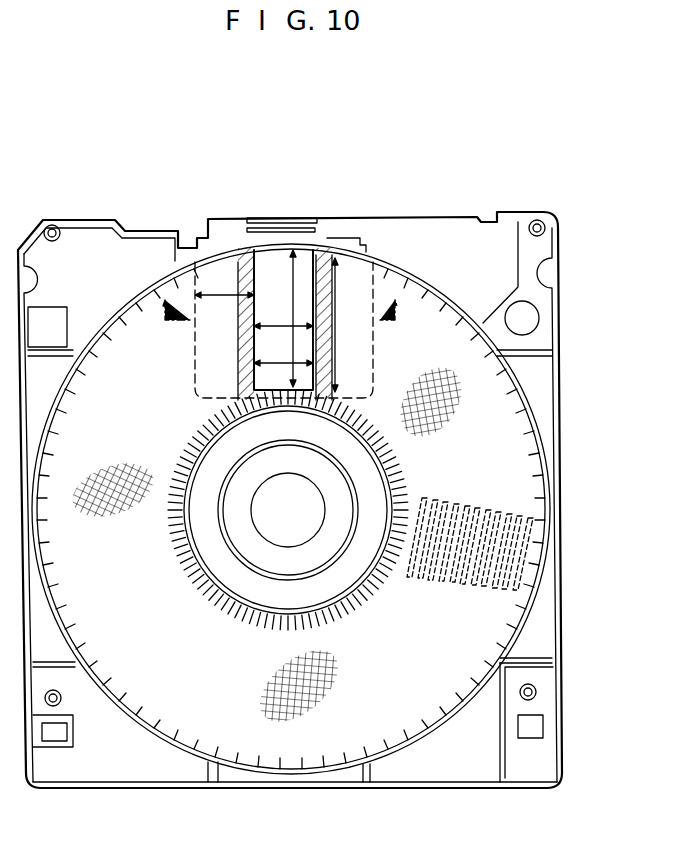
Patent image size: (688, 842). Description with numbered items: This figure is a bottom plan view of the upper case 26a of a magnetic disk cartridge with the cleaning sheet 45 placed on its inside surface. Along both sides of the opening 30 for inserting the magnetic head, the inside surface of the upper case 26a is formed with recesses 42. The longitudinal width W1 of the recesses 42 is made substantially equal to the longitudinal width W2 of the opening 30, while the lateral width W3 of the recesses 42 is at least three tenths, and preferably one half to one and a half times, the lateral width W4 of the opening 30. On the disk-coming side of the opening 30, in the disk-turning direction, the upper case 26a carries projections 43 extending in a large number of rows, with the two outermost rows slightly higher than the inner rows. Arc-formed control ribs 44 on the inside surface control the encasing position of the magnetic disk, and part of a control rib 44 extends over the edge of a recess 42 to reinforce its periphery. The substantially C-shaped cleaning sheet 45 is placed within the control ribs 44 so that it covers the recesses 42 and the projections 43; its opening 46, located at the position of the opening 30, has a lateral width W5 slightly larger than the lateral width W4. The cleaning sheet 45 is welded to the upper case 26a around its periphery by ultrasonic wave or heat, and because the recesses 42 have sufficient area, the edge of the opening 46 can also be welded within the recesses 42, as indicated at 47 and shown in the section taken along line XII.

The upper case 26a is at (417, 223).
The control ribs 44 is at (117, 297).
The welded part 47 is at (347, 610).
The recesses 42 is at (195, 262).
The opening of the cleaning sheet 46 is at (240, 228).
The opening for inserting the magnetic head 30 is at (302, 228).
The cleaning sheet 45 is at (463, 400).
The projections 43 is at (525, 556).
The longitudinal width of the recesses W1 is at (330, 370).
The longitudinal width of the opening W2 is at (293, 290).
The lateral width of the recesses W3 is at (218, 228).
The lateral width of the opening W4 is at (280, 326).
The lateral width of the cleaning sheet opening W5 is at (318, 350).
The section line XII is at (281, 320).